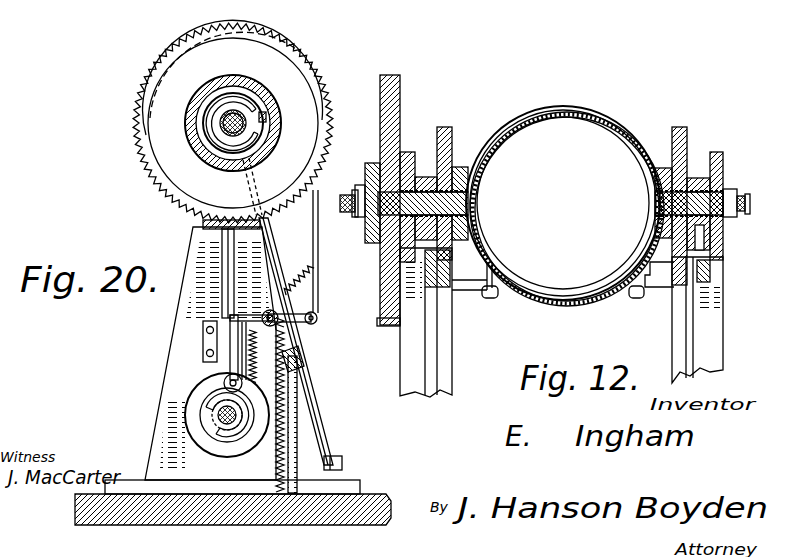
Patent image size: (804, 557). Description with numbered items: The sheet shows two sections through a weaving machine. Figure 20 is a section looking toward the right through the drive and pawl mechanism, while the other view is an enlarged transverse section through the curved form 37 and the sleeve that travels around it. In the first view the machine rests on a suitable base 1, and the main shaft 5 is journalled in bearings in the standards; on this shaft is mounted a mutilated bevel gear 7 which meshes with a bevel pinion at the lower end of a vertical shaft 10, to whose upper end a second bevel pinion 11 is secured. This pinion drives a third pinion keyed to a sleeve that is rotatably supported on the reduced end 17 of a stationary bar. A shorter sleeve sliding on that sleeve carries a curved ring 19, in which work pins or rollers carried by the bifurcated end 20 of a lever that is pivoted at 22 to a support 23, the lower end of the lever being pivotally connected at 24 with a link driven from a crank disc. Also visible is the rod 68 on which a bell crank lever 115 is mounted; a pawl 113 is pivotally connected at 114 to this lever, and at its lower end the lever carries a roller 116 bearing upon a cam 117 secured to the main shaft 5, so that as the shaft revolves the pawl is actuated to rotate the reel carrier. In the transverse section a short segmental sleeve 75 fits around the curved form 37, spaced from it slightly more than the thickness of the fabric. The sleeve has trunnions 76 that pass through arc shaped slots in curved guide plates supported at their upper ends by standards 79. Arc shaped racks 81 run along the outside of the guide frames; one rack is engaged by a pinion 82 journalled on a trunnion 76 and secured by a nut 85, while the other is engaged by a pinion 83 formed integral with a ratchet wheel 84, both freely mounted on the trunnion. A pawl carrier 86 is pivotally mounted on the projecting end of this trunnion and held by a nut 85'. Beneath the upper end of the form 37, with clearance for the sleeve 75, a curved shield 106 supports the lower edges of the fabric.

In FIG. 20, the base 1 is at (372, 497).
In FIG. 20, the main shaft 5 is at (224, 418).
In FIG. 20, the mutilated bevel gear 7 is at (190, 428).
In FIG. 20, the vertical shaft 10 is at (233, 273).
In FIG. 20, the second bevel pinion 11 is at (183, 118).
In FIG. 20, the reduced end 17 is at (232, 112).
In FIG. 20, the curved ring 19 is at (246, 112).
In FIG. 20, the bifurcated end 20 is at (266, 118).
In FIG. 20, the pivot 22 is at (304, 364).
In FIG. 20, the support 23 is at (298, 442).
In FIG. 20, the pivotal connection 24 is at (342, 465).
In FIG. 20, the rod 68 is at (262, 315).
In FIG. 20, the pawl 113 is at (312, 228).
In FIG. 20, the pivotal connection 114 is at (318, 319).
In FIG. 20, the bell crank lever 115 is at (232, 333).
In FIG. 20, the roller 116 is at (210, 366).
In FIG. 20, the cam 117 is at (212, 398).
In FIG. 12, the curved form 37 is at (614, 124).
In FIG. 12, the segmental sleeve 75 is at (616, 116).
In FIG. 12, the trunnion 76 is at (364, 220).
In FIG. 12, the standard 79 is at (406, 358).
In FIG. 12, the arc shaped rack 81 is at (420, 262).
In FIG. 12, the pinion 82 is at (722, 158).
In FIG. 12, the pinion 83 is at (404, 152).
In FIG. 12, the ratchet wheel 84 is at (399, 93).
In FIG. 12, the nut 85 is at (353, 172).
In FIG. 12, the nut 85' is at (758, 221).
In FIG. 12, the pawl carrier 86 is at (376, 163).
In FIG. 12, the curved shield 106 is at (590, 306).